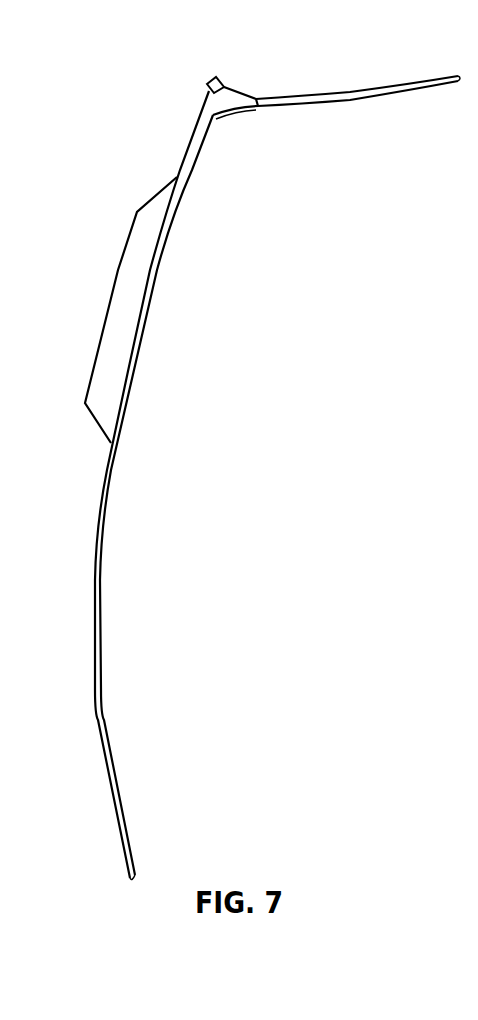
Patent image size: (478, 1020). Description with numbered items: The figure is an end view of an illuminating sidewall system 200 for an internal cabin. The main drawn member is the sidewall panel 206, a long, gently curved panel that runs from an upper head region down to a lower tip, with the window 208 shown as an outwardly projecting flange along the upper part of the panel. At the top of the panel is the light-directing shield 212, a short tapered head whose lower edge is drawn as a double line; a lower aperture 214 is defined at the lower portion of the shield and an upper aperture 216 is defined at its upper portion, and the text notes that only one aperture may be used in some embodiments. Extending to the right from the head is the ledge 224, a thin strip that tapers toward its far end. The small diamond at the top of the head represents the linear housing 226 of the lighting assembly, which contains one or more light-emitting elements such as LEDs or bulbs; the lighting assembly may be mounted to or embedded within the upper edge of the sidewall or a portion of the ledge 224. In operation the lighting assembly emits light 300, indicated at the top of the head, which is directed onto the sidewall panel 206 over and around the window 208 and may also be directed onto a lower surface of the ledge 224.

The illuminating sidewall system 200 is at (152, 82).
The sidewall panel 206 is at (174, 215).
The window 208 is at (138, 212).
The light-directing shield 212 is at (230, 115).
The lower aperture 214 is at (205, 115).
The upper aperture 216 is at (254, 100).
The ledge 224 is at (323, 95).
The linear housing 226 is at (215, 77).
The light 300 is at (240, 93).